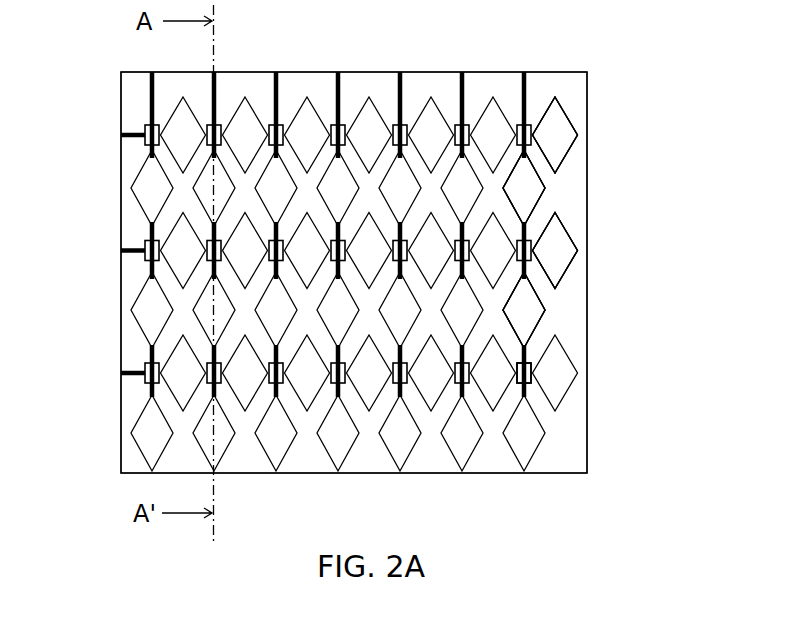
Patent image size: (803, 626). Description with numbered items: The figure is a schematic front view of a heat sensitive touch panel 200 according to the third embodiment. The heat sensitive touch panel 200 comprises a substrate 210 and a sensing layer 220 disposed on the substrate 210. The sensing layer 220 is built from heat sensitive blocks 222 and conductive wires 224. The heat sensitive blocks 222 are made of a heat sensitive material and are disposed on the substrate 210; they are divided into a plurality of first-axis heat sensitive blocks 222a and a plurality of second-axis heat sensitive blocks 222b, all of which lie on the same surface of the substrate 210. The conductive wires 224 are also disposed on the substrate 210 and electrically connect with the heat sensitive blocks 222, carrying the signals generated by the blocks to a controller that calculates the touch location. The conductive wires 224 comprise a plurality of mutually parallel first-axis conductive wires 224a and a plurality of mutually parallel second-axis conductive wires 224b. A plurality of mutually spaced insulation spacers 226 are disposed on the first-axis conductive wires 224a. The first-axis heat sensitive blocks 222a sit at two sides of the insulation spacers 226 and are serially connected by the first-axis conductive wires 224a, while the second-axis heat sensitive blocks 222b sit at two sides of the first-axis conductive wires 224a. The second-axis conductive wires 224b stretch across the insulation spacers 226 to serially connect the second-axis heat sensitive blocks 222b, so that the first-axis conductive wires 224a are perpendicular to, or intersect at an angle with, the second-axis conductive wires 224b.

The heat sensitive touch panel 200 is at (380, 56).
The substrate 210 is at (121, 93).
The sensing layer 220 is at (140, 207).
The heat sensitive blocks 222 is at (670, 104).
The first-axis heat sensitive blocks 222a is at (553, 132).
The second-axis heat sensitive blocks 222b is at (535, 188).
The conductive wires 224 is at (676, 210).
The first-axis conductive wires 224a is at (533, 240).
The second-axis conductive wires 224b is at (525, 272).
The insulation spacers 226 is at (531, 378).